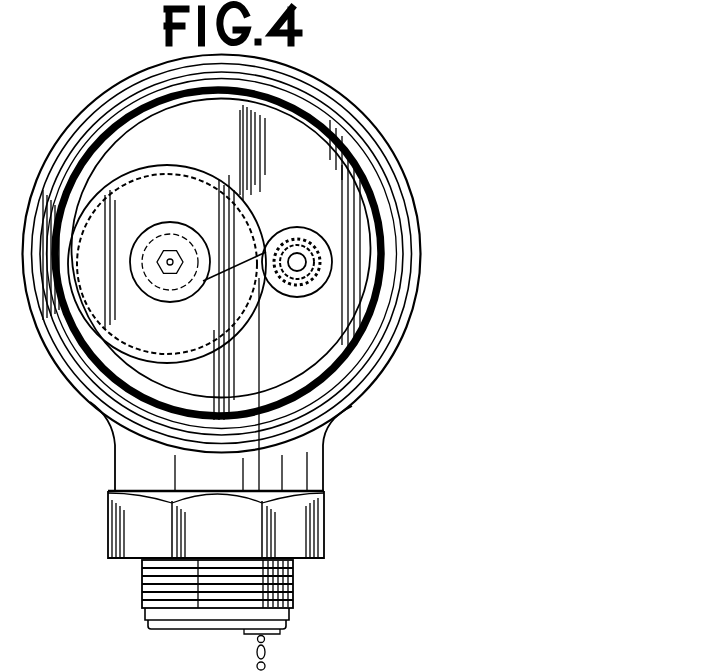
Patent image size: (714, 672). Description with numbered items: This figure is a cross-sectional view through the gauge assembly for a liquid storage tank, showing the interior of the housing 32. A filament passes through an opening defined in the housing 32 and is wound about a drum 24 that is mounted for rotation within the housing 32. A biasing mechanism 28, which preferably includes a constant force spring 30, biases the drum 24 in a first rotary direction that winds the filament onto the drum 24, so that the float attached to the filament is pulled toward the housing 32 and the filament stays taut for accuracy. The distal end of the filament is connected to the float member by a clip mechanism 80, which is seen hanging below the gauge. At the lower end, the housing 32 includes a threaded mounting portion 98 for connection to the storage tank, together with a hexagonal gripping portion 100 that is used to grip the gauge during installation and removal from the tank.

The drum 24 is at (170, 166).
The biasing mechanism 28 is at (275, 300).
The constant force spring 30 is at (234, 243).
The housing 32 is at (351, 108).
The clip mechanism 80 is at (266, 667).
The threaded mounting portion 98 is at (296, 588).
The hexagonal gripping portion 100 is at (312, 526).